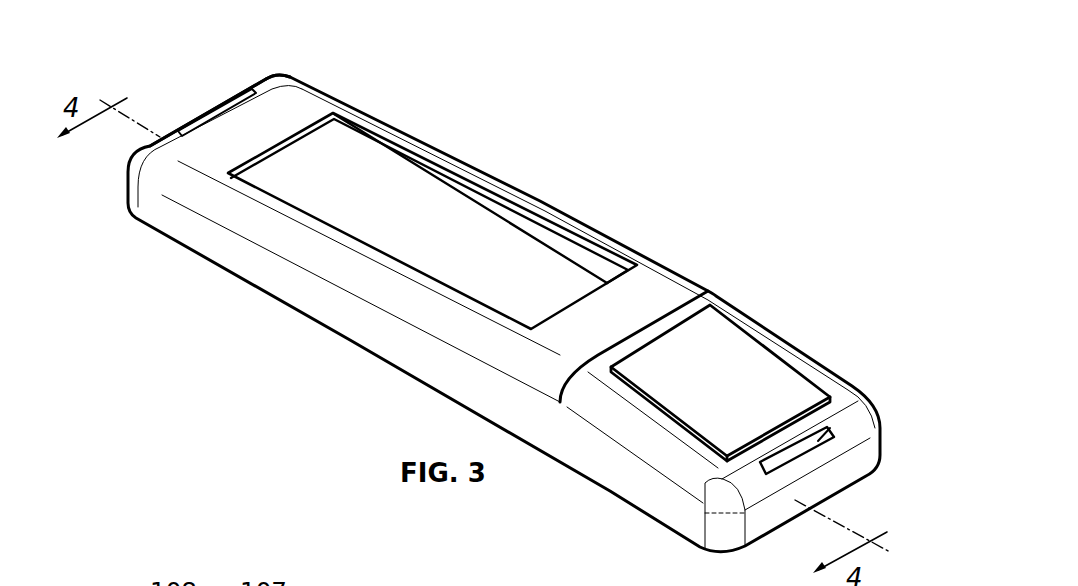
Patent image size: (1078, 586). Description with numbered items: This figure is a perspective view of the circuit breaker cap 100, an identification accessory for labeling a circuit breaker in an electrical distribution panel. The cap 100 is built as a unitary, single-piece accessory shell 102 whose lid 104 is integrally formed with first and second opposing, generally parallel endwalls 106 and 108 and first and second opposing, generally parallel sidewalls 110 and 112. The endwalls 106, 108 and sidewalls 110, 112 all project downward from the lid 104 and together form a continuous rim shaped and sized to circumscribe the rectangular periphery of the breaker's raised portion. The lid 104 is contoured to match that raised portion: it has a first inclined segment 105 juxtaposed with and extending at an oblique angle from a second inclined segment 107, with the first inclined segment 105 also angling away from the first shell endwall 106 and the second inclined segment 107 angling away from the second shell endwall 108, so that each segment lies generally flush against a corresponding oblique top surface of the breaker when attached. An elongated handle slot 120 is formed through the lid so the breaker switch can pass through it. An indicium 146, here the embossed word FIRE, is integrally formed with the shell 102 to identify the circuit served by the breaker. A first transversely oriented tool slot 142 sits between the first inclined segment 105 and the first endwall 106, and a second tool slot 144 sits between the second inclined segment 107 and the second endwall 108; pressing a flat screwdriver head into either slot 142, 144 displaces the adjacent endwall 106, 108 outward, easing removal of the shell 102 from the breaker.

The circuit breaker cap 100 is at (772, 125).
The accessory shell 102 is at (647, 243).
The lid 104 is at (445, 157).
The first inclined segment 105 is at (774, 351).
The first shell endwall 106 is at (866, 474).
The second inclined segment 107 is at (308, 107).
The second shell endwall 108 is at (257, 80).
The first sidewall 110 is at (320, 298).
The second sidewall 112 is at (457, 188).
The handle slot 120 is at (553, 223).
The first tool slot 142 is at (833, 430).
The second tool slot 144 is at (200, 117).
The indicium 146 is at (719, 332).